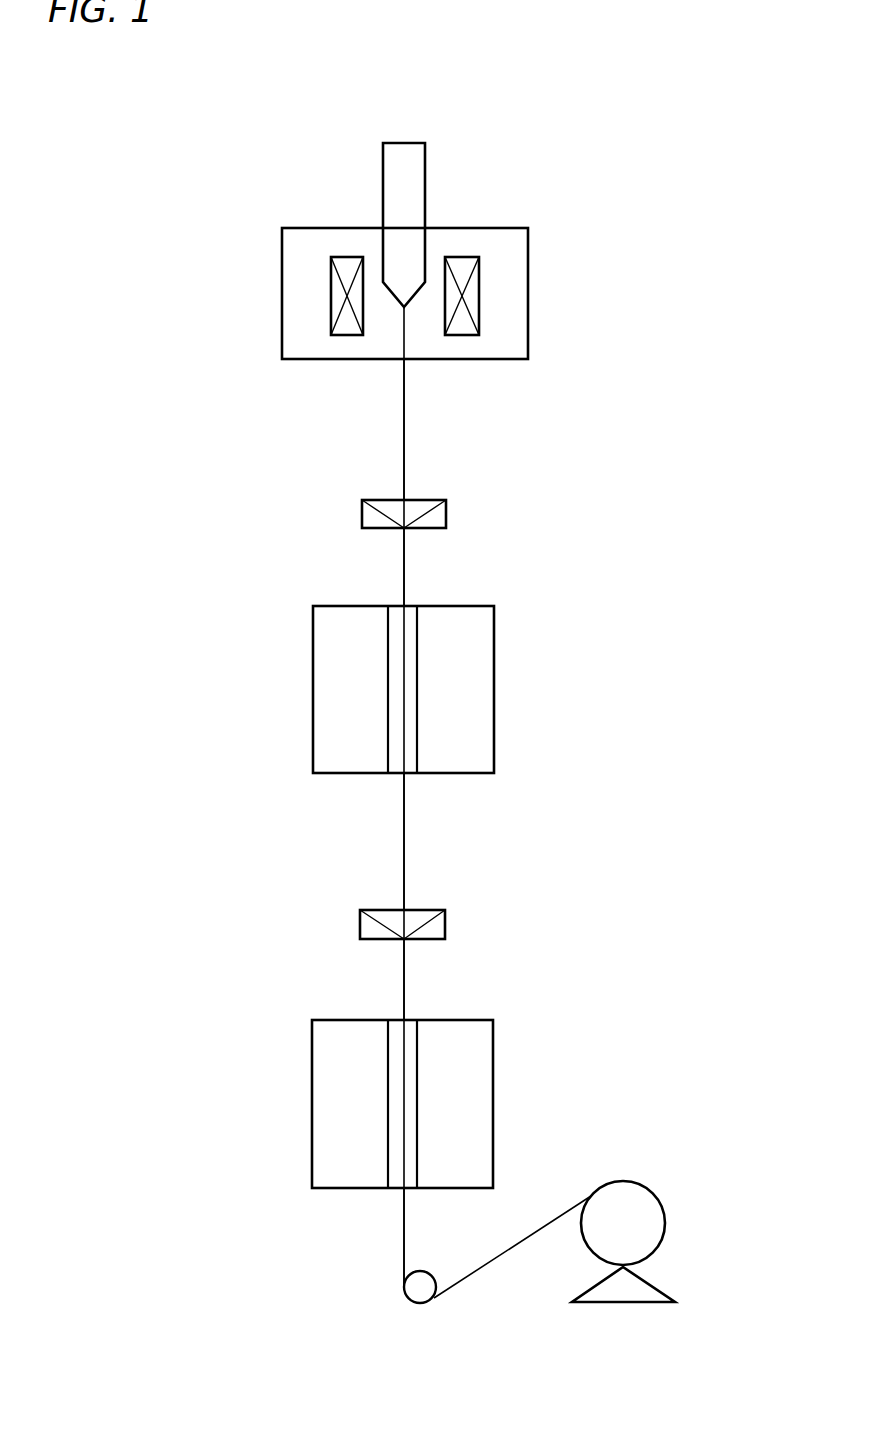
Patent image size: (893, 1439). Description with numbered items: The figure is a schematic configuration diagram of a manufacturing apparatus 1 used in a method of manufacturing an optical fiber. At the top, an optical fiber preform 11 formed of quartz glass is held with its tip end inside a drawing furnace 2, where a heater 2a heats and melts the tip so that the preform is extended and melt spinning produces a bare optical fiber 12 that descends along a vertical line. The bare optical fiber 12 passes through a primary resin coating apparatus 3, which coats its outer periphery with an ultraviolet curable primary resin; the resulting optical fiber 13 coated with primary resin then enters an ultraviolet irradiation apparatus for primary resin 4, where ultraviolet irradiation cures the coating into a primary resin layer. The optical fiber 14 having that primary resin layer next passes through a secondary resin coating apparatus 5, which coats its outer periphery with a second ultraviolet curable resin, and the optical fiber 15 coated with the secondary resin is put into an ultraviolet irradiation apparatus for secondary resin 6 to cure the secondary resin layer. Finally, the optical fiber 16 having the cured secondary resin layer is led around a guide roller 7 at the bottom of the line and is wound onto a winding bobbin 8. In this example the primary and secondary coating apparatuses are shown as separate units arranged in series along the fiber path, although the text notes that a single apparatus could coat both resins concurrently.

The manufacturing apparatus 1 is at (703, 140).
The drawing furnace 2 is at (512, 248).
The heater 2a is at (479, 297).
The primary resin coating apparatus 3 is at (446, 503).
The ultraviolet irradiation apparatus for primary resin 4 is at (520, 666).
The secondary resin coating apparatus 5 is at (445, 919).
The ultraviolet irradiation apparatus for secondary resin 6 is at (503, 1065).
The guide roller 7 is at (415, 1292).
The winding bobbin 8 is at (662, 1202).
The optical fiber preform 11 is at (418, 172).
The bare optical fiber 12 is at (404, 427).
The optical fiber coated with primary resin 13 is at (404, 567).
The optical fiber with primary resin layer 14 is at (404, 832).
The optical fiber coated with secondary resin 15 is at (404, 982).
The optical fiber with secondary resin layer 16 is at (402, 1237).